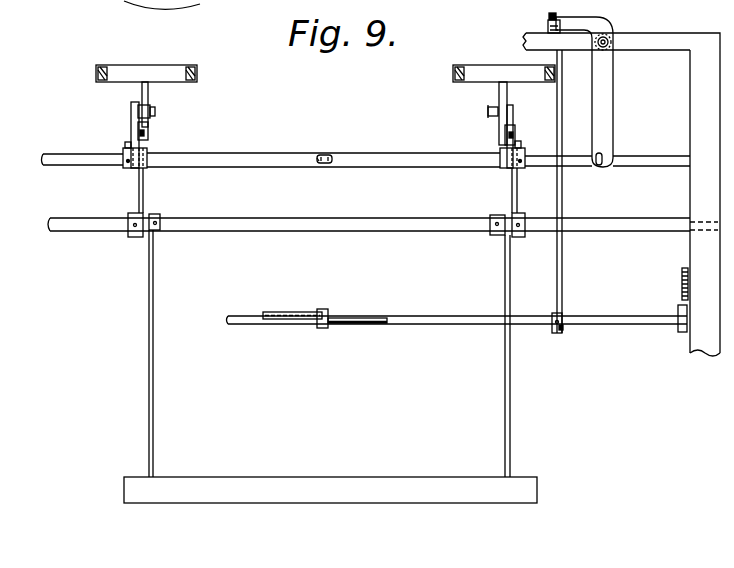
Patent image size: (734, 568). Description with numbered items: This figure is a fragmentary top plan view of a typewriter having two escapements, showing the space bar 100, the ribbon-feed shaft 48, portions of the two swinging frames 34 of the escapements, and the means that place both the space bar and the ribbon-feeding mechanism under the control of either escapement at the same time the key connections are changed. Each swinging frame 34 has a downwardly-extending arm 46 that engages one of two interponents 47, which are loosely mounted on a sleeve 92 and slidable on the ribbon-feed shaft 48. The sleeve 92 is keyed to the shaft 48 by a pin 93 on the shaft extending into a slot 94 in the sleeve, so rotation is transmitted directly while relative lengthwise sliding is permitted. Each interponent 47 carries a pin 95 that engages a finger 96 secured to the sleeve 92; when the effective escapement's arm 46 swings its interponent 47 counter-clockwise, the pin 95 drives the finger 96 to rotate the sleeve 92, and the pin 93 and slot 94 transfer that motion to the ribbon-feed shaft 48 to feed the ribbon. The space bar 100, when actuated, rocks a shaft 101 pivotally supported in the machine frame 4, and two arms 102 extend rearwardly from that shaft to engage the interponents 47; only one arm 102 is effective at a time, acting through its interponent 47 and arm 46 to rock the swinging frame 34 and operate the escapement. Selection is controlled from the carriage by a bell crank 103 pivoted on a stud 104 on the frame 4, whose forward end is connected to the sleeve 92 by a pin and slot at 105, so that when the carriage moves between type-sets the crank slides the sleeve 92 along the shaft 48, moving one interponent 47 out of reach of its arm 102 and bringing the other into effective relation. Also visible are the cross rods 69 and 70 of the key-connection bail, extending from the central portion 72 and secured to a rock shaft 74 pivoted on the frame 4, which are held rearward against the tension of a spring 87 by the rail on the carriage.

The machine frame 4 is at (687, 45).
The swinging frame 34 is at (140, 68).
The arm 46 is at (149, 93).
The interponent 47 is at (133, 106).
The ribbon-feed shaft 48 is at (666, 160).
The cross rod 69 is at (338, 325).
The cross rod 70 is at (290, 312).
The central portion 72 is at (333, 304).
The rock shaft 74 is at (428, 325).
The spring 87 is at (683, 300).
The sleeve 92 is at (425, 153).
The pin 93 is at (330, 155).
The slot 94 is at (318, 157).
The pin 95 is at (125, 145).
The finger 96 is at (138, 136).
The space bar 100 is at (318, 484).
The rock shaft 101 is at (348, 231).
The arm 102 is at (145, 207).
The bell crank 103 is at (602, 28).
The stud 104 is at (610, 38).
The pin and slot connection 105 is at (598, 168).